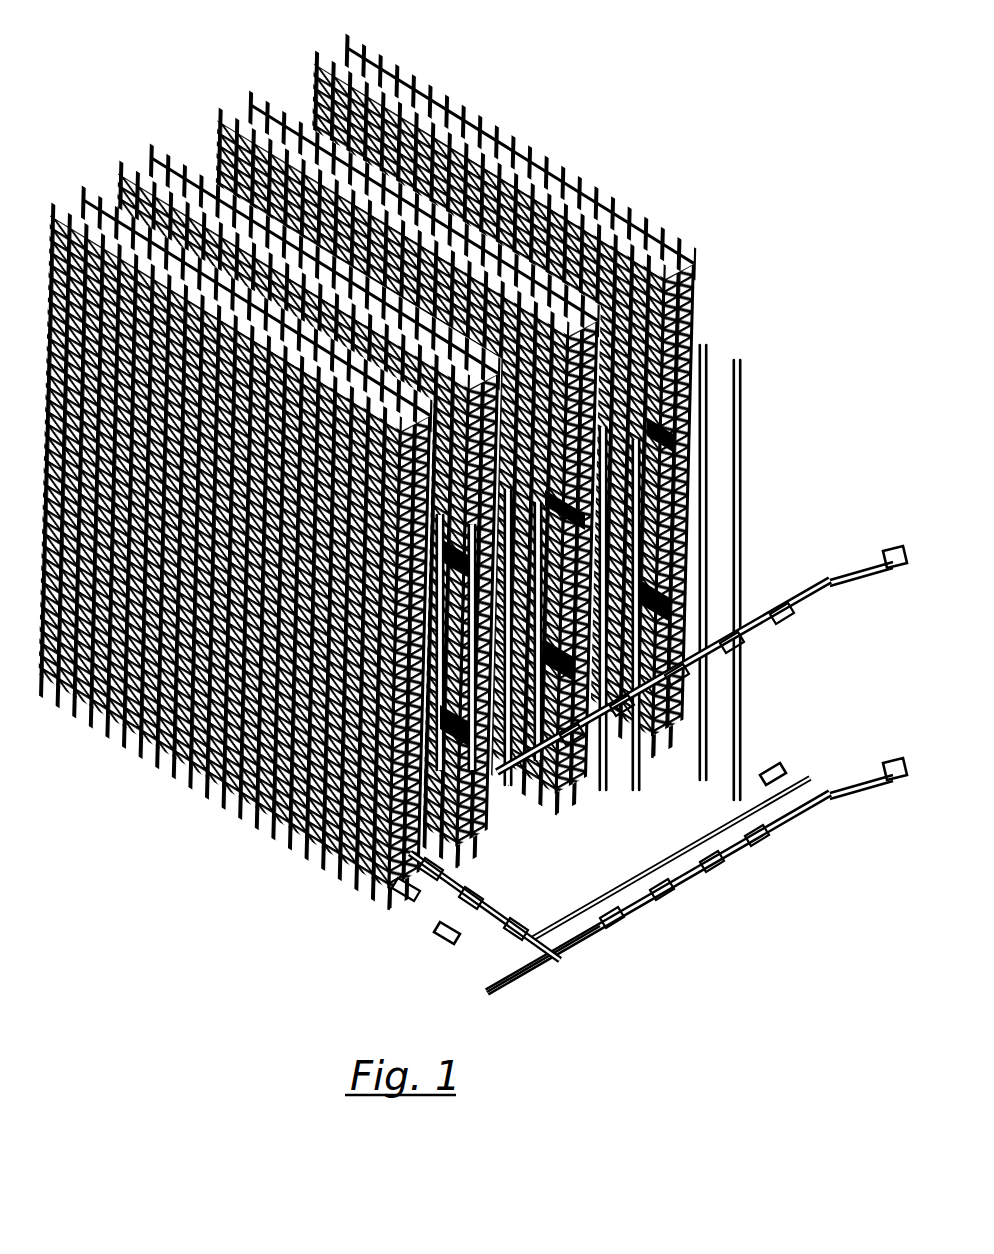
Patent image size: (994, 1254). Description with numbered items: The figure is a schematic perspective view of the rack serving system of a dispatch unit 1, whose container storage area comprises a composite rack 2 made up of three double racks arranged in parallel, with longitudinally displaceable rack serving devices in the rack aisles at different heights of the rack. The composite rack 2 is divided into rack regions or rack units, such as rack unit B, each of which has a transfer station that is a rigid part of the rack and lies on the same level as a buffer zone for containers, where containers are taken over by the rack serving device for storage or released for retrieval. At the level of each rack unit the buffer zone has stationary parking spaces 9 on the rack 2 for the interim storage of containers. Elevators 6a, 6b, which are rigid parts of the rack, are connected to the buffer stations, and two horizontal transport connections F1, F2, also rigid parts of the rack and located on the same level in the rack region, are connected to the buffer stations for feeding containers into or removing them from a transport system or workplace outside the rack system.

The dispatch unit 1 is at (387, 455).
The composite rack 2 is at (137, 163).
The stationary parking spaces 9 is at (403, 910).
The rack unit B is at (770, 770).
The elevator 6a is at (467, 906).
The elevator 6b is at (575, 942).
The horizontal transport connection F1 is at (633, 915).
The horizontal transport connection F2 is at (757, 634).